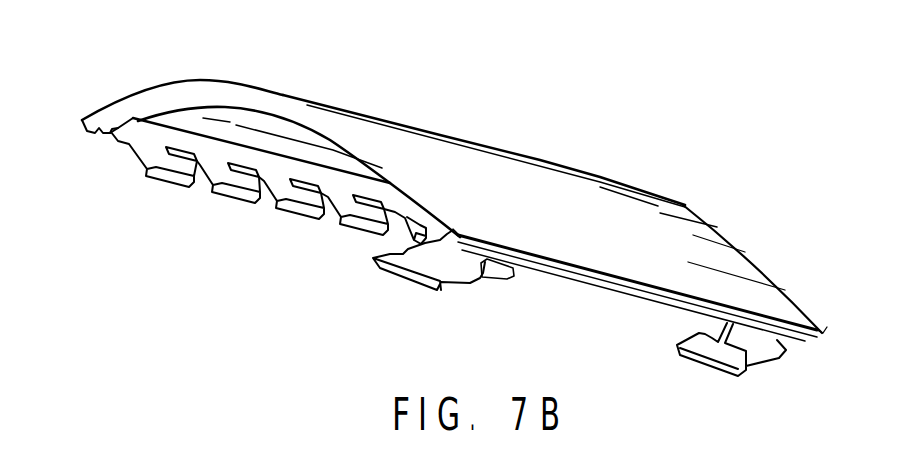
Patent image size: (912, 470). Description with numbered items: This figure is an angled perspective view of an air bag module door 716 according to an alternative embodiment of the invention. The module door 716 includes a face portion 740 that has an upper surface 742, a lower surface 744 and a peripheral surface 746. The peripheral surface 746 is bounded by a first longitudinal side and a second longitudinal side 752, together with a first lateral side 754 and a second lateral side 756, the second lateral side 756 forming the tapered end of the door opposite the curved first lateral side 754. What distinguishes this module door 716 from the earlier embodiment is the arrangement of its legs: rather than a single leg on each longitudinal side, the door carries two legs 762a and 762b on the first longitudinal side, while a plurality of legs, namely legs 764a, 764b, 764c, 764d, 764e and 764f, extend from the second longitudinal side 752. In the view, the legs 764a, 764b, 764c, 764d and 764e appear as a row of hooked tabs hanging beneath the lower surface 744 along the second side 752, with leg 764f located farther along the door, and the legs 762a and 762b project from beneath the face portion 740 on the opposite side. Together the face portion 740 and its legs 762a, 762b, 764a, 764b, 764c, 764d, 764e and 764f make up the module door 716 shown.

The face portion 740 is at (593, 233).
The upper surface 742 is at (615, 195).
The lower surface 744 is at (203, 120).
The peripheral surface 746 is at (545, 257).
The second longitudinal side 752 is at (97, 133).
The first lateral side 754 is at (153, 101).
The second lateral side 756 is at (823, 334).
The air bag module door 716 is at (263, 97).
The leg 762a is at (453, 262).
The leg 762b is at (772, 348).
The leg 764a is at (161, 165).
The leg 764b is at (232, 172).
The leg 764c is at (295, 200).
The leg 764d is at (360, 215).
The leg 764e is at (410, 227).
The leg 764f is at (492, 265).